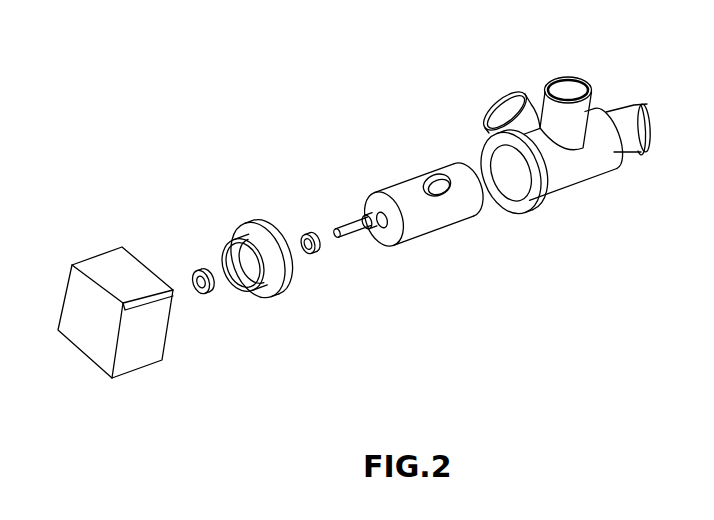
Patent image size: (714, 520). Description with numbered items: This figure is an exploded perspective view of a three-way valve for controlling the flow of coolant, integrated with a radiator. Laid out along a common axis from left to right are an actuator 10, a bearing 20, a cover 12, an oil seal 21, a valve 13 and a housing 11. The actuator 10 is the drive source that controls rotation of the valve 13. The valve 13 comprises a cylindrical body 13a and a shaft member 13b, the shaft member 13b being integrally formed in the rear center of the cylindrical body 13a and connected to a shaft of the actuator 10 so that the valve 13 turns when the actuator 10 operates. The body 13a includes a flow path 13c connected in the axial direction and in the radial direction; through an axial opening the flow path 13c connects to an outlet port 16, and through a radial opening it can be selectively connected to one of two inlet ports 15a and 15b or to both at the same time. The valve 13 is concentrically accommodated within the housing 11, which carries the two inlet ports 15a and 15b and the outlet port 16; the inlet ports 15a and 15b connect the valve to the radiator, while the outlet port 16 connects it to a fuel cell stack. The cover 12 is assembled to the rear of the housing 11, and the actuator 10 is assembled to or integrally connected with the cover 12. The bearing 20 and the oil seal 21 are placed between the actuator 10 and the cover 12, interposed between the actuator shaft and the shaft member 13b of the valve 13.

The actuator 10 is at (120, 263).
The housing 11 is at (570, 135).
The cover 12 is at (260, 225).
The valve 13 is at (433, 211).
The cylindrical body 13a is at (407, 223).
The shaft member 13b is at (355, 227).
The flow path 13c is at (427, 186).
The inlet port 15a is at (513, 107).
The inlet port 15b is at (575, 90).
The outlet port 16 is at (625, 145).
The bearing 20 is at (208, 263).
The oil seal 21 is at (310, 232).